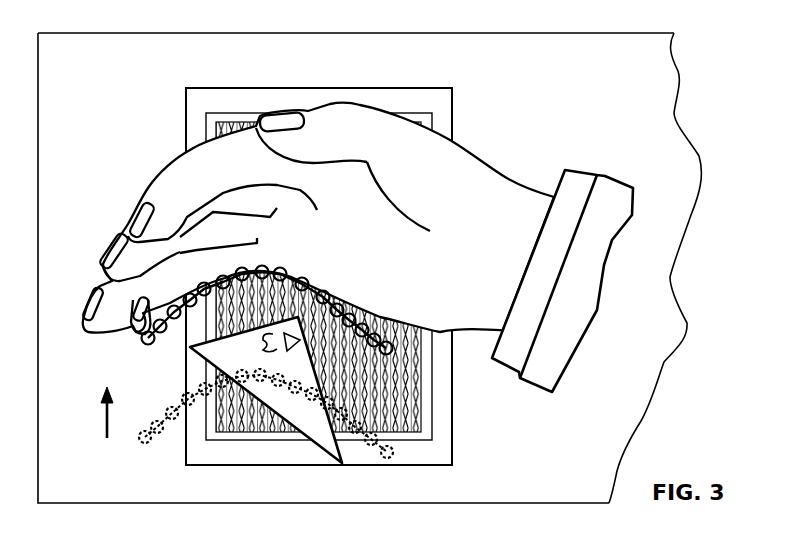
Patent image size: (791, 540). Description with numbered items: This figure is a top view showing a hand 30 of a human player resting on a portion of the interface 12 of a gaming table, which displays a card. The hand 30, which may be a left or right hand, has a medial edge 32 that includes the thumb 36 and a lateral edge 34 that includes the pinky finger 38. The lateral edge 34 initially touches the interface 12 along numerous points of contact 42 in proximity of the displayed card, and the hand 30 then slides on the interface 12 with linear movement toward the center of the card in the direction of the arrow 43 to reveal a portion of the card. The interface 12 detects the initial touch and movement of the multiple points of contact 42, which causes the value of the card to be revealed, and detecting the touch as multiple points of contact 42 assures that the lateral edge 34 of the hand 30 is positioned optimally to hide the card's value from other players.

The interface 12 is at (88, 101).
The hand 30 is at (505, 210).
The medial edge 32 is at (413, 135).
The lateral edge 34 is at (423, 333).
The thumb 36 is at (318, 126).
The pinky finger 38 is at (142, 333).
The points of contact 42 is at (175, 318).
The arrow 43 is at (105, 425).